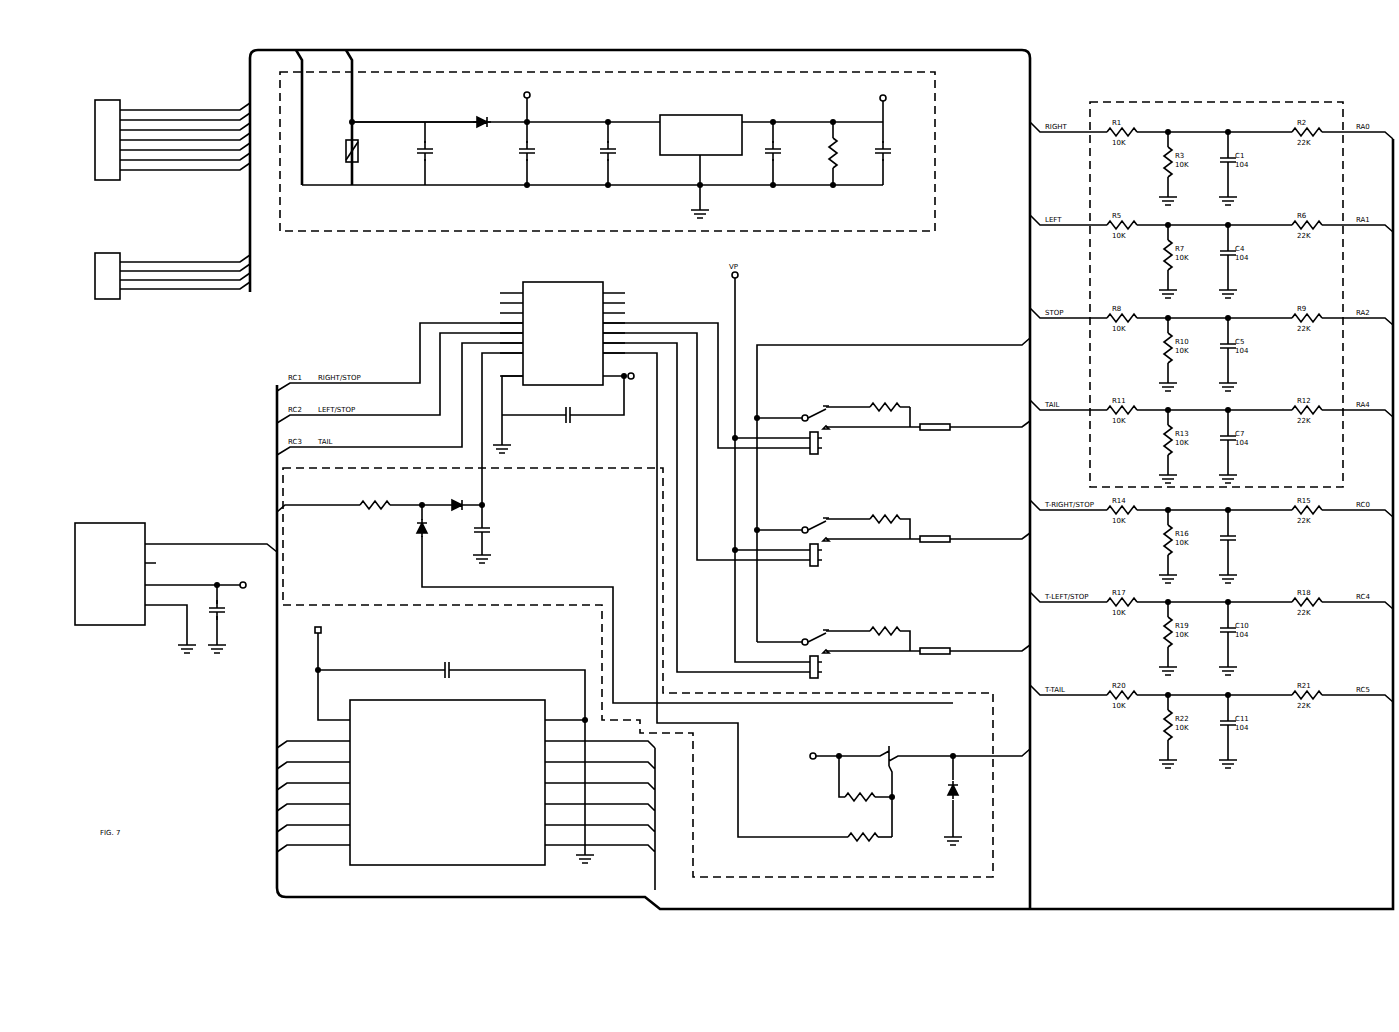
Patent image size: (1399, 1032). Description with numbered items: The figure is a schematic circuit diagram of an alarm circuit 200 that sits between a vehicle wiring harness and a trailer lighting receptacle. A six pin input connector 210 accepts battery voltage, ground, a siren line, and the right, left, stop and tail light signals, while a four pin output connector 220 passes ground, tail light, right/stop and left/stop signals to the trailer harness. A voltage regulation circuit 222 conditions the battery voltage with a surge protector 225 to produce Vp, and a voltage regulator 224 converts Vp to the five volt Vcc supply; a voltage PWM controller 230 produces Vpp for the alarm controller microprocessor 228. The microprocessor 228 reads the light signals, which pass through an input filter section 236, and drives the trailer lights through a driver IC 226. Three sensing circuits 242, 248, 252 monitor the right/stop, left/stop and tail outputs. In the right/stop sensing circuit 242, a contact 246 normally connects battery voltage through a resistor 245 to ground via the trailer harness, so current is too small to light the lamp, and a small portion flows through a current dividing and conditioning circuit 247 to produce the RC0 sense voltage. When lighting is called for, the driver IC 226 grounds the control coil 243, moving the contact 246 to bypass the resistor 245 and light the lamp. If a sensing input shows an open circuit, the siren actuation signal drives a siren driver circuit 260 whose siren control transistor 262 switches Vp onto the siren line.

The alarm circuit 200 is at (1127, 79).
The input connector 210 is at (100, 128).
The output connector 220 is at (100, 278).
The voltage regulation circuit 222 is at (644, 174).
The voltage regulator 224 is at (722, 135).
The surge protector 225 is at (346, 144).
The driver IC 226 is at (556, 310).
The alarm controller microprocessor 228 is at (466, 754).
The voltage PWM controller 230 is at (100, 543).
The input signal filter section 236 is at (1284, 102).
The sensing circuit 242 is at (892, 488).
The control coil 243 is at (812, 452).
The resistor 245 is at (882, 404).
The contact 246 is at (822, 405).
The current dividing and conditioning circuit 247 is at (1252, 517).
The sensing circuit 248 is at (905, 517).
The sensing circuit 252 is at (905, 629).
The siren driver circuit 260 is at (673, 674).
The siren control transistor 262 is at (893, 746).